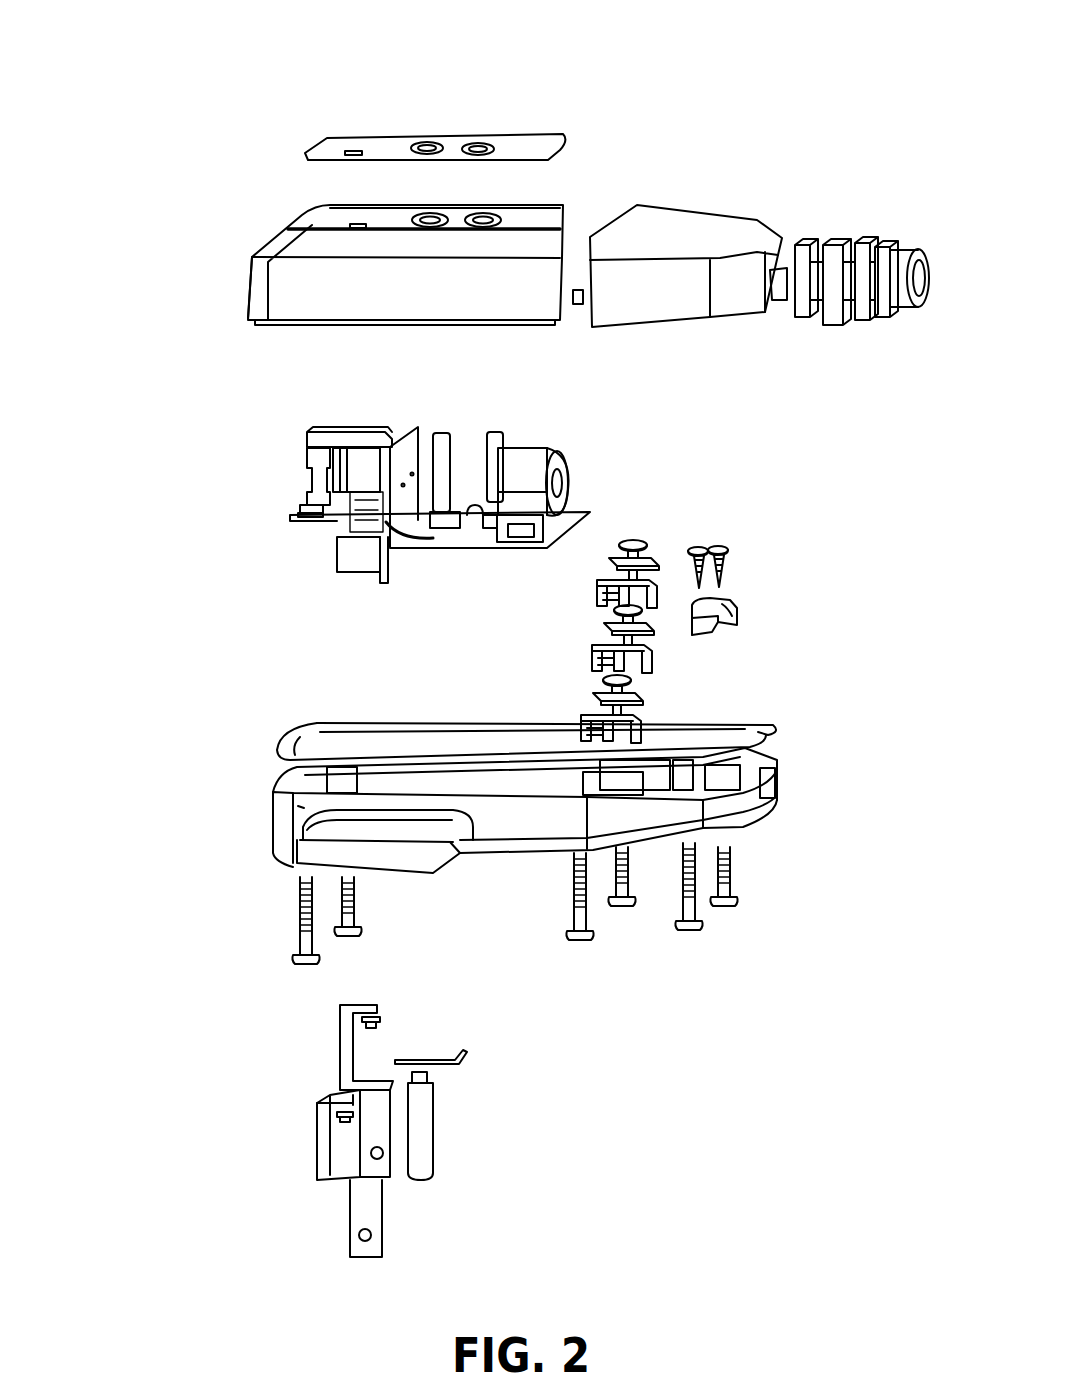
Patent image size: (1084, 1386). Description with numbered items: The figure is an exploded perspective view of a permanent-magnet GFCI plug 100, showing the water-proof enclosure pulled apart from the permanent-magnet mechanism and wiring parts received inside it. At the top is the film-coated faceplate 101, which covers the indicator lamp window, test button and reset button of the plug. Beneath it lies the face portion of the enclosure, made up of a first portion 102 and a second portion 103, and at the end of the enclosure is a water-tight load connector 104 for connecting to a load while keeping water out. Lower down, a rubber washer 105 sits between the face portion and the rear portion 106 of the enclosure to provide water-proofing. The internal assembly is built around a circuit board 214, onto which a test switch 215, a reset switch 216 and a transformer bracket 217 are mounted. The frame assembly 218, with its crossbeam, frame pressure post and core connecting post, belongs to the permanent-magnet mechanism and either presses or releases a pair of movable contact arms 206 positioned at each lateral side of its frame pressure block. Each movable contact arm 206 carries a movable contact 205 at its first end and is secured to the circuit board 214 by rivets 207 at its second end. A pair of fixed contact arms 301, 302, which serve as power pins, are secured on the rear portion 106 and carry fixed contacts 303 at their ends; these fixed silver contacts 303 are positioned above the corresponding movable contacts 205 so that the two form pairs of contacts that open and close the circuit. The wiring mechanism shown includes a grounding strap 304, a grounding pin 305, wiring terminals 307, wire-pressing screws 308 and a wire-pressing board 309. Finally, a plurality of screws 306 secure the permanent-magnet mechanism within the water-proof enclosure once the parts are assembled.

The permanent-magnet GFCI plug 100 is at (636, 36).
The film-coated faceplate 101 is at (375, 142).
The first portion 102 is at (317, 246).
The second portion 103 is at (690, 228).
The water-tight load connector 104 is at (851, 222).
The rubber washer 105 is at (300, 727).
The rear portion 106 is at (293, 803).
The movable contact 205 is at (303, 502).
The movable contact arms 206 is at (310, 513).
The rivets 207 is at (478, 502).
The circuit board 214 is at (460, 550).
The test switch 215 is at (438, 442).
The reset switch 216 is at (495, 435).
The transformer bracket 217 is at (533, 460).
The frame assembly 218 is at (310, 442).
The fixed contact arm 301 is at (335, 1032).
The fixed contact arm 302 is at (317, 1130).
The fixed contacts 303 is at (367, 1075).
The grounding strap 304 is at (465, 1060).
The grounding pin 305 is at (440, 1158).
The screws 306 is at (300, 953).
The wiring terminals 307 is at (567, 707).
The wire-pressing screws 308 is at (720, 550).
The wire-pressing board 309 is at (728, 600).